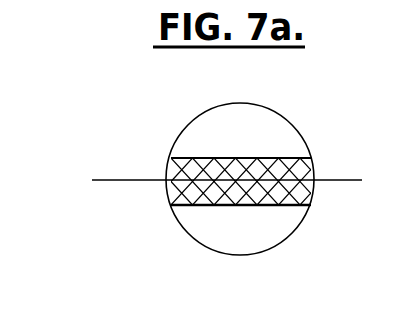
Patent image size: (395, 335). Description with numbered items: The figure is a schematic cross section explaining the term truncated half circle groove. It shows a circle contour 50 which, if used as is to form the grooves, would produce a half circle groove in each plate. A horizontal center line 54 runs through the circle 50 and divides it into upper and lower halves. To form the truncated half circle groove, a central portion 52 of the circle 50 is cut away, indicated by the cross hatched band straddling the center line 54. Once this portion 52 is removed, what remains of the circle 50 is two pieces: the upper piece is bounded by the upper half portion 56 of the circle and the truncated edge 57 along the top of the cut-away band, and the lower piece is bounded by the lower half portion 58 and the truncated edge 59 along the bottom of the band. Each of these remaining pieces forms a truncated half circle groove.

The circle contour 50 is at (132, 121).
The cut-away portion 52 is at (306, 171).
The horizontal center line 54 is at (120, 180).
The upper half portion 56 is at (203, 113).
The truncated edge 57 is at (273, 158).
The lower half portion 58 is at (272, 250).
The truncated edge 59 is at (215, 208).